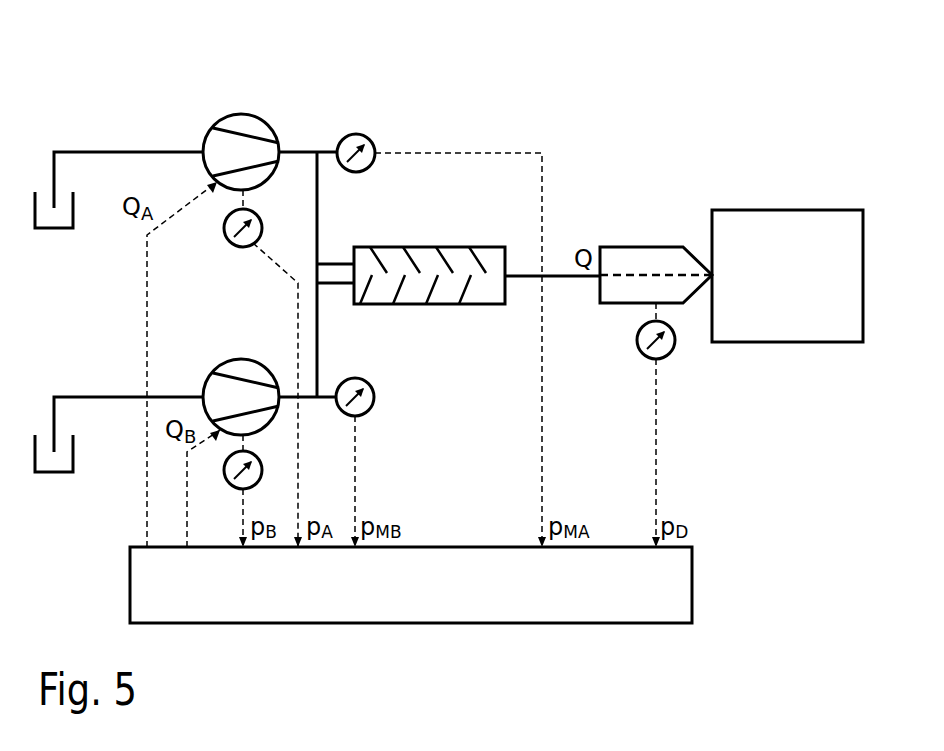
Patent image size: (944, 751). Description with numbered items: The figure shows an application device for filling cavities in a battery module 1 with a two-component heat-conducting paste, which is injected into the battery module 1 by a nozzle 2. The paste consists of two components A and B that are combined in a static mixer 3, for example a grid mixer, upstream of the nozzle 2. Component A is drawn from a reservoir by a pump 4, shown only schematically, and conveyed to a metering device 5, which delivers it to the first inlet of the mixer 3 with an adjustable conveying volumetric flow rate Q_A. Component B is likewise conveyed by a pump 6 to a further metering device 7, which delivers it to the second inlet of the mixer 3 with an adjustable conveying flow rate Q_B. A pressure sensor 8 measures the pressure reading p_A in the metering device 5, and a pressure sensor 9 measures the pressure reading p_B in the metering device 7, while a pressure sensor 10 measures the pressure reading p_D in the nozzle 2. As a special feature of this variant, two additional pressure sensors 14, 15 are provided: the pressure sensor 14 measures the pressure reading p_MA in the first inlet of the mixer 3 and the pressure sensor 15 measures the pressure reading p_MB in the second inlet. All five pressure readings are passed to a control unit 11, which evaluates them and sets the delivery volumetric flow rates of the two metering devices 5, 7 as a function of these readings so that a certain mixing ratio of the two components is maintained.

The battery module 1 is at (800, 210).
The nozzle 2 is at (655, 247).
The static mixer 3 is at (457, 247).
The pump 4 is at (60, 229).
The metering device 5 is at (243, 114).
The pump 6 is at (60, 473).
The metering device 7 is at (243, 359).
The pressure sensor 8 is at (231, 243).
The pressure sensor 9 is at (234, 486).
The pressure sensor 10 is at (637, 350).
The control unit 11 is at (692, 580).
The pressure sensor 14 is at (356, 134).
The pressure sensor 15 is at (374, 400).